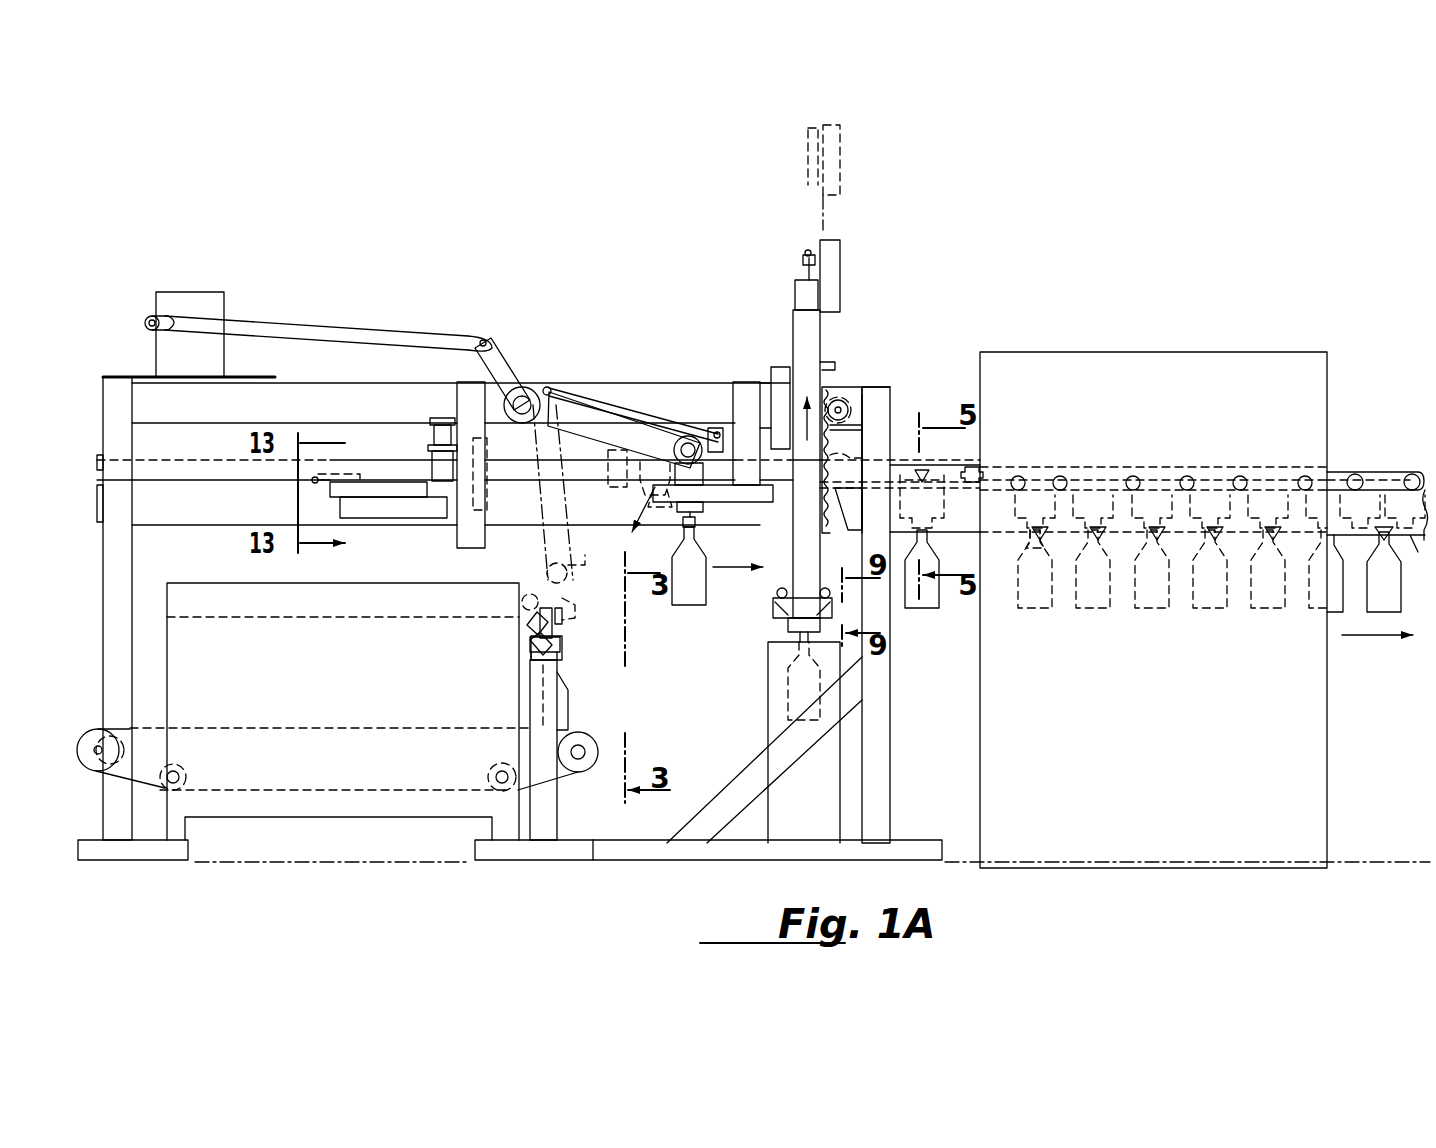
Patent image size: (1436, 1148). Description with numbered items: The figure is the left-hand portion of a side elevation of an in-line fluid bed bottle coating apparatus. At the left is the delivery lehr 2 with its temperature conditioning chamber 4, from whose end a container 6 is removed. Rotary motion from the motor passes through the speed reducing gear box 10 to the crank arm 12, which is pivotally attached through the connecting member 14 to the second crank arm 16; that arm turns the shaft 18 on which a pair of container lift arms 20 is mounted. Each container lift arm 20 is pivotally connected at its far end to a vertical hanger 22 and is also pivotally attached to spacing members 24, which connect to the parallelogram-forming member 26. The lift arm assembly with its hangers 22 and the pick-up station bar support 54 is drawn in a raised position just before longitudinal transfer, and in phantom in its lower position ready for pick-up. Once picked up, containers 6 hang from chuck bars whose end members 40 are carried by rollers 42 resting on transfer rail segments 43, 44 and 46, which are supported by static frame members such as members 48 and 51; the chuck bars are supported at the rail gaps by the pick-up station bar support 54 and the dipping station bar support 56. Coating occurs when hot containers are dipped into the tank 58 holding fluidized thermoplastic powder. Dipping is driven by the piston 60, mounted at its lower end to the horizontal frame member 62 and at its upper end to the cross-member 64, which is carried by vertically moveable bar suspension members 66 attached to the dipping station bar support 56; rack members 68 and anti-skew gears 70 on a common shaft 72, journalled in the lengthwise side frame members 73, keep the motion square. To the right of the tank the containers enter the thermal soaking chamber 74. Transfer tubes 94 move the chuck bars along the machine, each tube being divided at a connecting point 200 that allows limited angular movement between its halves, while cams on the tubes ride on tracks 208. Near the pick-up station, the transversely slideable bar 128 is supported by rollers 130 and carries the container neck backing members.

The delivery lehr 2 is at (320, 727).
The temperature conditioning chamber 4 is at (200, 595).
The container 6 is at (576, 698).
The speed reducing gear box 10 is at (222, 300).
The crank arm 12 is at (183, 302).
The connecting member 14 is at (400, 333).
The second crank arm 16 is at (500, 370).
The shaft 18 is at (530, 398).
The container lift arm 20 is at (608, 425).
The vertical hanger 22 is at (700, 480).
The spacing member 24 is at (710, 430).
The parallelogram-forming member 26 is at (650, 415).
The end member 40 is at (410, 530).
The roller 42 is at (1122, 478).
The transfer rail segment 43 is at (215, 505).
The transfer rail segment 44 is at (763, 502).
The transfer rail segment 46 is at (997, 530).
The static frame member 48 is at (118, 388).
The static frame member 51 is at (878, 738).
The pick-up station bar support 54 is at (680, 495).
The dipping station bar support 56 is at (775, 617).
The fluid bed coating tank 58 is at (775, 692).
The piston 60 is at (805, 298).
The horizontal frame member 62 is at (840, 384).
The cross-member 64 is at (830, 265).
The vertically moveable bar suspension member 66 is at (812, 340).
The rack member 68 is at (850, 452).
The anti-skew gear 70 is at (848, 408).
The common shaft 72 is at (858, 418).
The lengthwise side frame member 73 is at (863, 432).
The thermal soaking chamber 74 is at (1142, 355).
The transfer tube 94 is at (1405, 470).
The transversely slideable bar 128 is at (515, 630).
The roller 130 is at (533, 612).
The connecting point 200 is at (975, 463).
The track 208 is at (385, 482).